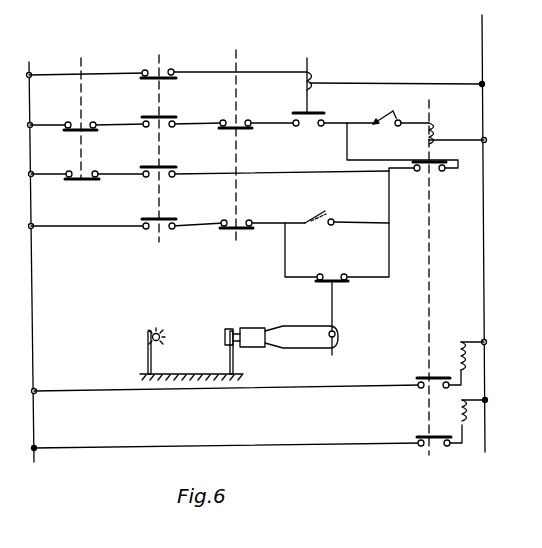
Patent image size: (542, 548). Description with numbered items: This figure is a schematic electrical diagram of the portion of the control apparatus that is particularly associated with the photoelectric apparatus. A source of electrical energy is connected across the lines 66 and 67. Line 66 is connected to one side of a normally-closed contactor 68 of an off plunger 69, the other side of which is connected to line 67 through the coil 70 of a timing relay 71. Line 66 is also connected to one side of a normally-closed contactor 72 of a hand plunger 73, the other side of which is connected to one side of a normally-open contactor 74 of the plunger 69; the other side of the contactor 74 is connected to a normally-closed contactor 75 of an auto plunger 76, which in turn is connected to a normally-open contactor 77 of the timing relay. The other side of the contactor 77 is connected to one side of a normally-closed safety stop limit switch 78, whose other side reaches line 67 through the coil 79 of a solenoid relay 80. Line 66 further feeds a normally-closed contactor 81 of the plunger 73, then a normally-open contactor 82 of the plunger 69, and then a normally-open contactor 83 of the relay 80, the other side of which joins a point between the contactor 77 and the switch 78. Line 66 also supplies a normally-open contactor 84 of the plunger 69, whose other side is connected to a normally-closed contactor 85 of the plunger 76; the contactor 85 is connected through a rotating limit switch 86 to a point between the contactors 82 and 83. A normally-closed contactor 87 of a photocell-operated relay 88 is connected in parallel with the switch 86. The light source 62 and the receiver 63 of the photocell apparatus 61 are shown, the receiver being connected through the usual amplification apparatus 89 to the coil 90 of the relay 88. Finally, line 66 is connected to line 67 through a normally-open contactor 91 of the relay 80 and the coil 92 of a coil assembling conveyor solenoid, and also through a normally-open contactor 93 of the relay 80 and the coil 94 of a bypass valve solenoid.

The photo-cell apparatus 61 is at (189, 374).
The light source 62 is at (146, 352).
The receiver 63 is at (236, 358).
The line 66 is at (30, 63).
The line 67 is at (482, 46).
The normally-closed contactor 68 is at (171, 69).
The off plunger 69 is at (160, 143).
The coil 70 is at (310, 74).
The timing relay 71 is at (312, 112).
The normally-closed contactor 72 is at (68, 122).
The hand plunger 73 is at (80, 152).
The normally-open contactor 74 is at (152, 116).
The normally-closed contactor 75 is at (237, 121).
The auto plunger 76 is at (237, 161).
The normally-open contactor 77 is at (309, 126).
The safety stop limit switch 78 is at (386, 117).
The coil 79 is at (431, 134).
The solenoid relay 80 is at (430, 205).
The normally-closed contactor 81 is at (71, 181).
The normally-open contactor 82 is at (145, 165).
The normally-open contactor 83 is at (419, 176).
The normally-open contactor 84 is at (152, 216).
The normally-closed contactor 85 is at (240, 231).
The rotating limit switch 86 is at (319, 216).
The normally-closed contactor 87 is at (350, 284).
The photocell-operated relay 88 is at (335, 313).
The amplification apparatus 89 is at (278, 348).
The coil 90 is at (336, 338).
The normally-open contactor 91 is at (422, 377).
The coil 92 is at (459, 345).
The normally-open contactor 93 is at (422, 436).
The coil 94 is at (465, 427).